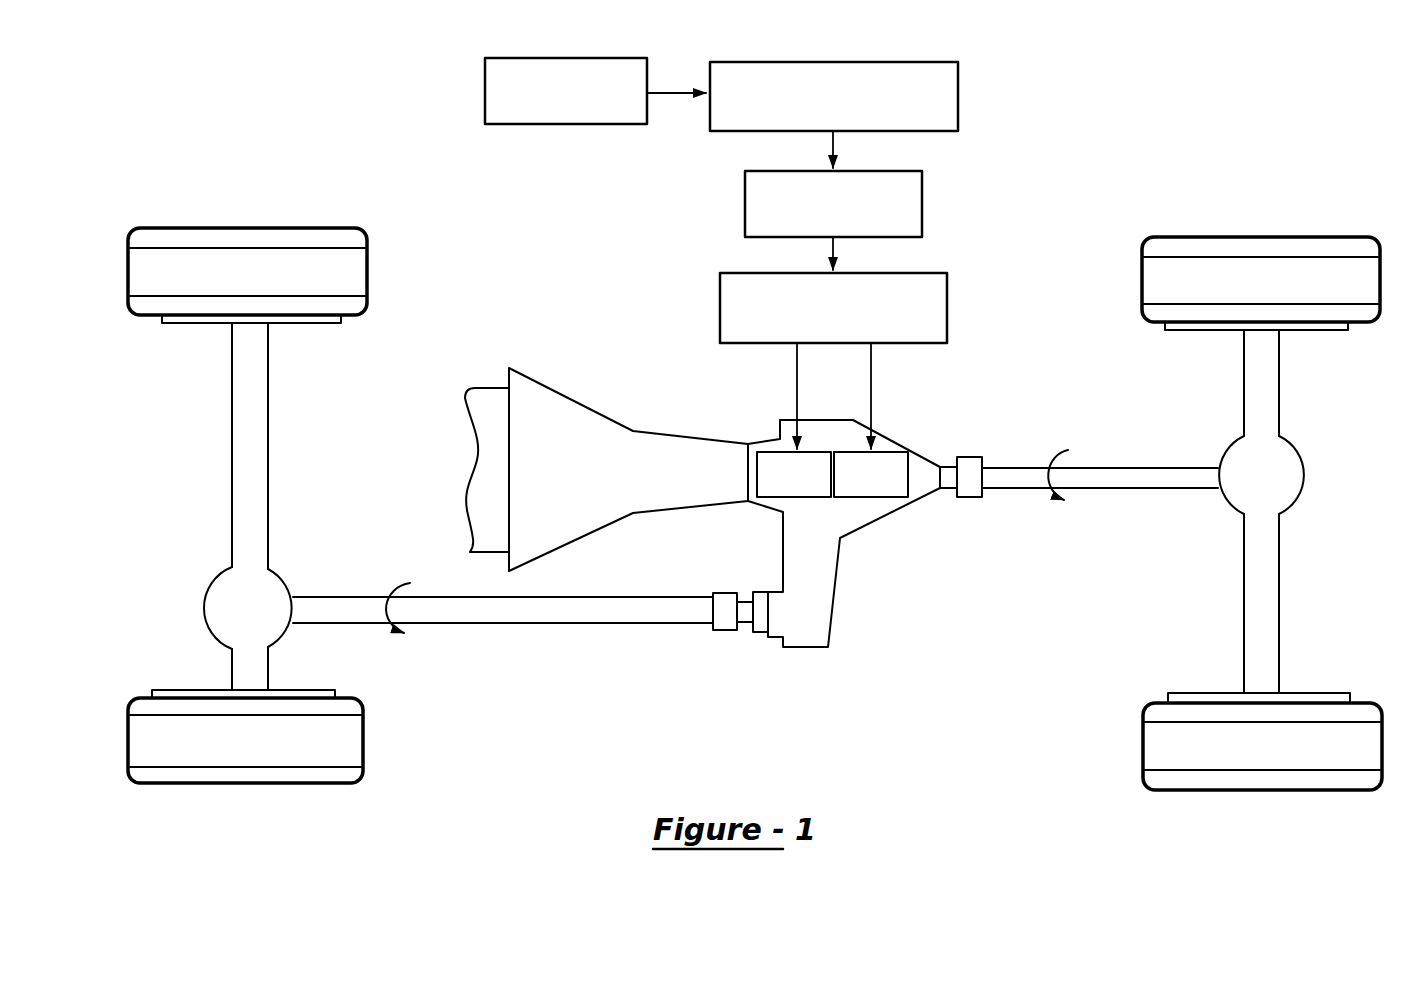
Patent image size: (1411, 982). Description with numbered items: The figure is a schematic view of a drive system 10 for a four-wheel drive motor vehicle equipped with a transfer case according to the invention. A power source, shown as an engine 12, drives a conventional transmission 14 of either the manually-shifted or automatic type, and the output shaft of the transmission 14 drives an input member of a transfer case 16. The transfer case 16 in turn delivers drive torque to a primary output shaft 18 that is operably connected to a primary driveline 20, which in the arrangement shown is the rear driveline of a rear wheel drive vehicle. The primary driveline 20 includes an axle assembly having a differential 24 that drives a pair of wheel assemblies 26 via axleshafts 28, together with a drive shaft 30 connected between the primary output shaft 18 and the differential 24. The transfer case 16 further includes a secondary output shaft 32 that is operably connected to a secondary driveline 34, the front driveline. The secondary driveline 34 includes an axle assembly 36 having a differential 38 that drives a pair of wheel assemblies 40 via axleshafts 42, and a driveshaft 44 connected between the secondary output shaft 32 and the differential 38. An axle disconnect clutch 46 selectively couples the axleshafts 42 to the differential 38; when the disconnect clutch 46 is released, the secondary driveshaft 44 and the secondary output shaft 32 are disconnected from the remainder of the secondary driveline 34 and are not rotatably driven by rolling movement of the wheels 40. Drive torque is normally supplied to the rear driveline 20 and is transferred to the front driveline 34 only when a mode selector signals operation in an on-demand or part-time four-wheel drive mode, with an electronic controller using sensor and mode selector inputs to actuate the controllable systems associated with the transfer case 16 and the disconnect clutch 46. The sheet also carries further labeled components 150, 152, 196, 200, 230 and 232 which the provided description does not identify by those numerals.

The drive system 10 is at (1020, 578).
The engine 12 is at (215, 277).
The transmission 14 is at (1232, 272).
The transfer case 16 is at (490, 428).
The primary output shaft 18 is at (606, 487).
The primary driveline 20 is at (882, 508).
The differential 24 is at (306, 331).
The wheel assemblies 26 is at (1287, 336).
The axleshafts 28 is at (228, 425).
The drive shaft 30 is at (1282, 395).
The secondary output shaft 32 is at (247, 610).
The secondary driveline 34 is at (1272, 482).
The axle assembly 36 is at (577, 610).
The differential 38 is at (1003, 475).
The wheel assemblies 40 is at (940, 466).
The axleshafts 42 is at (970, 458).
The driveshaft 44 is at (760, 615).
The axle disconnect clutch 46 is at (725, 617).
The range clutch 150 is at (803, 490).
The shift mechanism 152 is at (922, 300).
The motor 196 is at (767, 190).
The mode clutch 200 is at (872, 490).
The mode selector 230 is at (520, 73).
The controller 232 is at (733, 78).